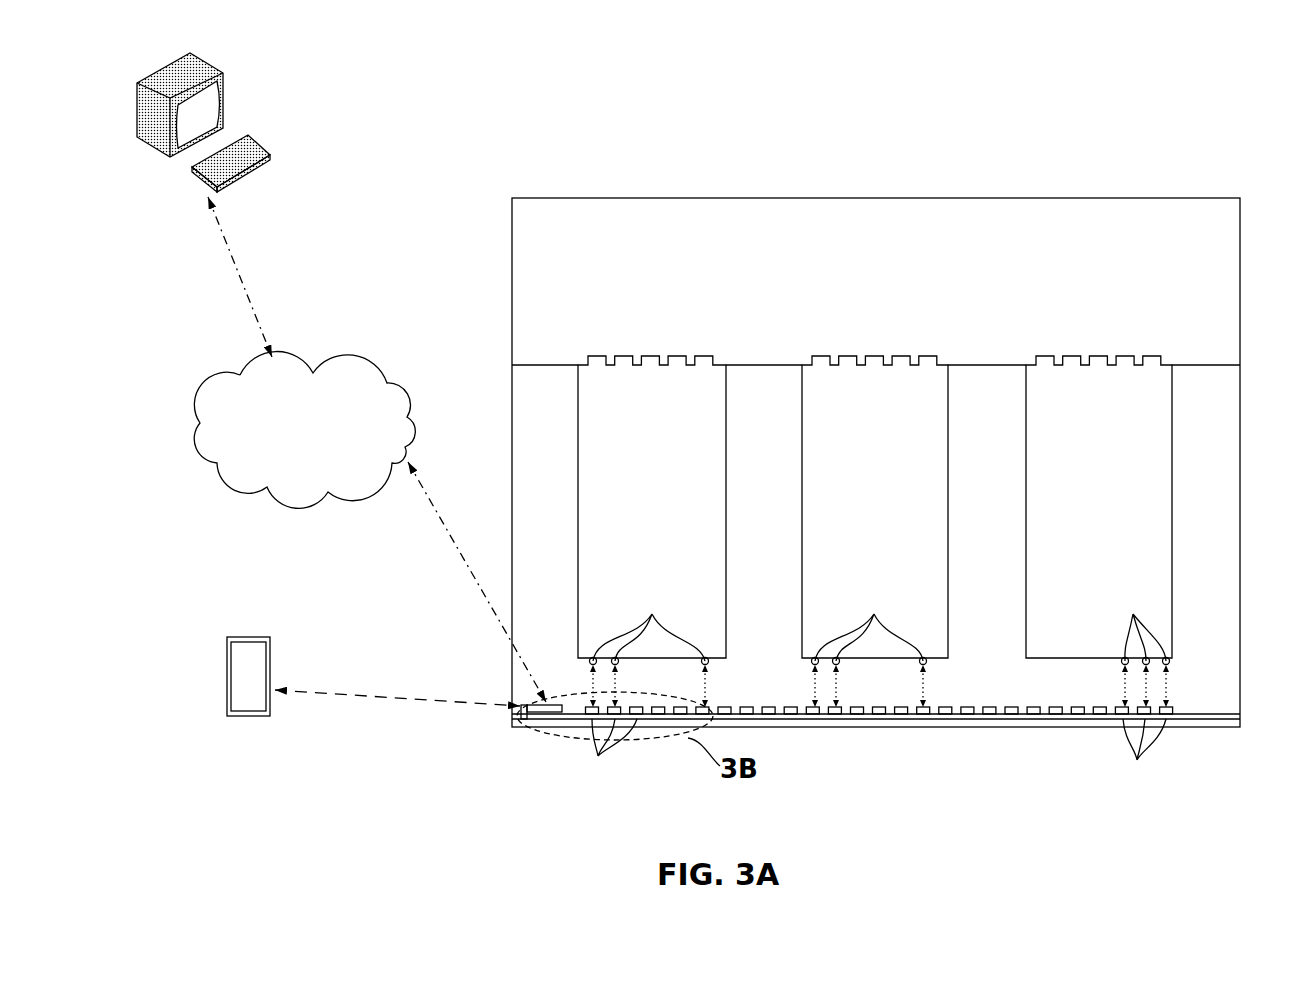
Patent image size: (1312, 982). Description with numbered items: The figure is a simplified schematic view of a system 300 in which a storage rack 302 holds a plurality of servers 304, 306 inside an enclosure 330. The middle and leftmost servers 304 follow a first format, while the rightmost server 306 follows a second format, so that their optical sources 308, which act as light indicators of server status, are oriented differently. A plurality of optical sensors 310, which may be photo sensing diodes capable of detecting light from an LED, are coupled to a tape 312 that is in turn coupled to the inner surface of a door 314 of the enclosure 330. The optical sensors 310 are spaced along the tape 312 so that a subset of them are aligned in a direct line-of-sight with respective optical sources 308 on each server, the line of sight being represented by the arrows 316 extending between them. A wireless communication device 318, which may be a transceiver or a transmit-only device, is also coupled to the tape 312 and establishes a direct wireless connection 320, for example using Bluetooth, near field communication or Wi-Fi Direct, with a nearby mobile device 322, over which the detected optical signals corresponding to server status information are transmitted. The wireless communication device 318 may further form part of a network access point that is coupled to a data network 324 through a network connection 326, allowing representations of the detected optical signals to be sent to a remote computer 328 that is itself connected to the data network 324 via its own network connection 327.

The system 300 is at (447, 160).
The storage rack 302 is at (560, 197).
The servers 304 is at (672, 481).
The server 306 is at (1117, 481).
The optical sources 308 is at (672, 606).
The optical sensors 310 is at (873, 756).
The tape 312 is at (1190, 713).
The door 314 is at (1219, 729).
The arrows 316 is at (703, 683).
The wireless communication device 318 is at (530, 720).
The direct wireless connection 320 is at (398, 700).
The mobile device 322 is at (246, 637).
The data network 324 is at (192, 441).
The network connection 326 is at (460, 560).
The network connection 327 is at (248, 294).
The remote computer 328 is at (223, 90).
The enclosure 330 is at (1240, 597).